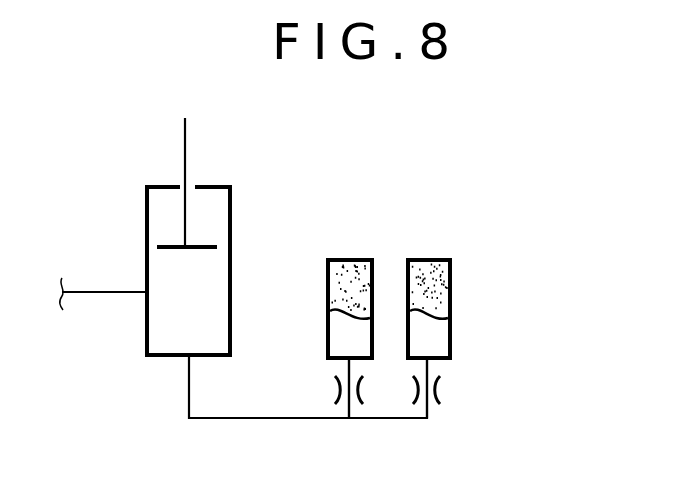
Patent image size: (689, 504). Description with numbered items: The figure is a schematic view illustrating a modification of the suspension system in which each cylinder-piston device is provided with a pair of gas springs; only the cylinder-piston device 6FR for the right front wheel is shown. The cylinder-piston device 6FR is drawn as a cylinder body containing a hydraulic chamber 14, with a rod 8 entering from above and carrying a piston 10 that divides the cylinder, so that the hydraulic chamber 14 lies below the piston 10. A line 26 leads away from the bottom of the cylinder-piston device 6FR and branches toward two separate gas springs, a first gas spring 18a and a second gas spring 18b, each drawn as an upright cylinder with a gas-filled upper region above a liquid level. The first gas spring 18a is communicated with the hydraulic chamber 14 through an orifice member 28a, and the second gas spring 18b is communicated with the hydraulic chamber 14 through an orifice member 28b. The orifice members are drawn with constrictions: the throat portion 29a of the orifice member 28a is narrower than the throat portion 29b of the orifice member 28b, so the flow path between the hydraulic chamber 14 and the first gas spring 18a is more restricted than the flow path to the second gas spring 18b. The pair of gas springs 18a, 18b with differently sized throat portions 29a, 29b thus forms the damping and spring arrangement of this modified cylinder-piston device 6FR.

The cylinder-piston device 6FR is at (147, 223).
The push rod 8 is at (187, 143).
The piston 10 is at (207, 243).
The hydraulic chamber 14 is at (210, 313).
The brake fluid pipe 26 is at (236, 418).
The first gas spring 18a is at (365, 260).
The second gas spring 18b is at (447, 260).
The orifice member 28a is at (372, 388).
The orifice member 28b is at (449, 396).
The throat portion 29a is at (336, 386).
The throat portion 29b is at (443, 383).